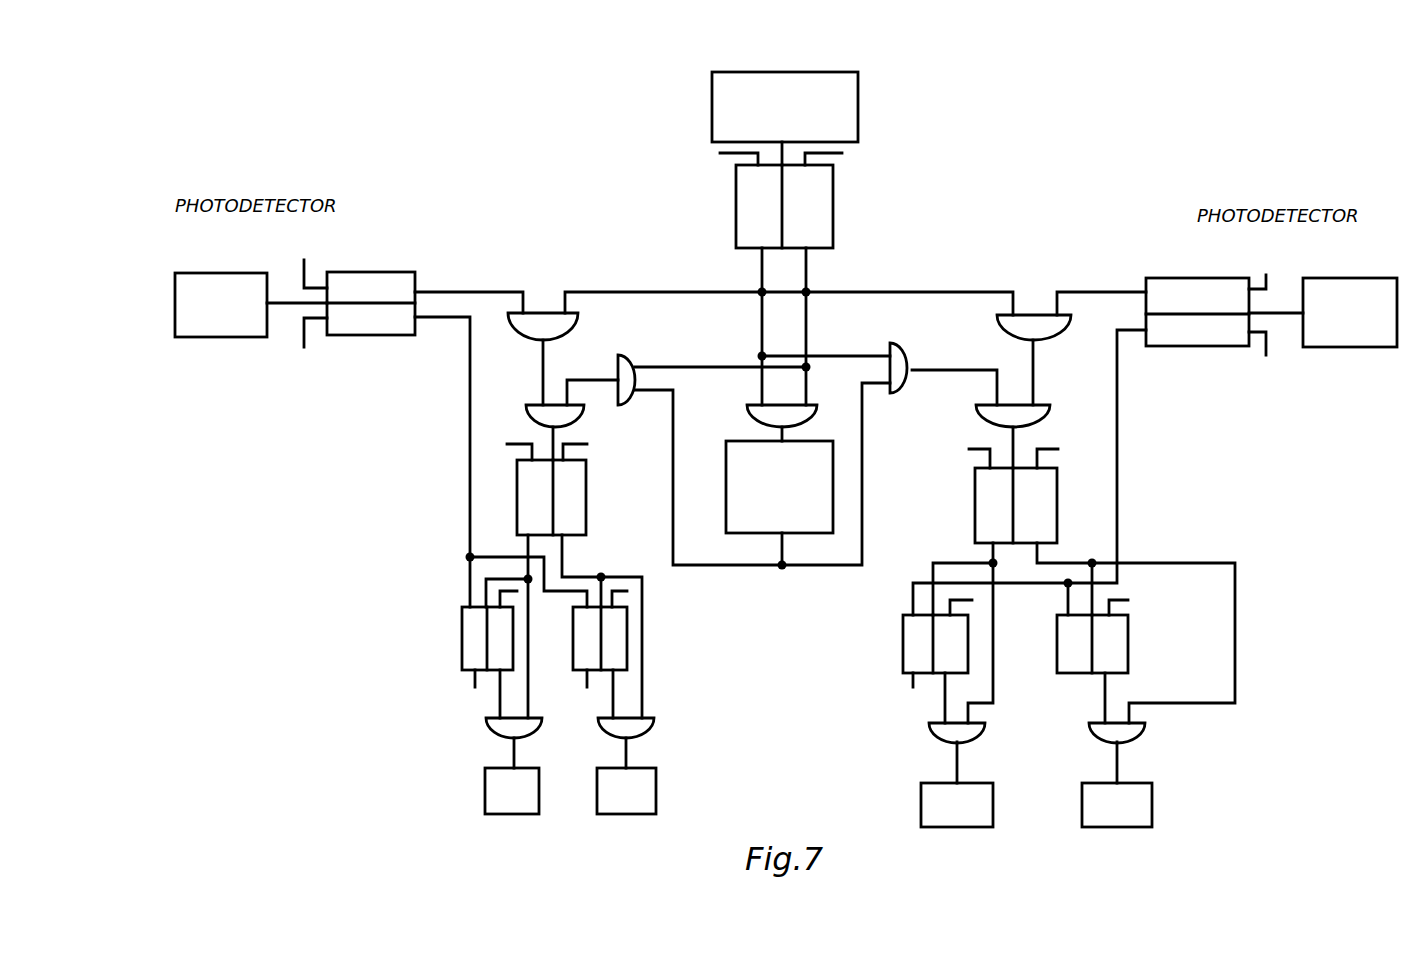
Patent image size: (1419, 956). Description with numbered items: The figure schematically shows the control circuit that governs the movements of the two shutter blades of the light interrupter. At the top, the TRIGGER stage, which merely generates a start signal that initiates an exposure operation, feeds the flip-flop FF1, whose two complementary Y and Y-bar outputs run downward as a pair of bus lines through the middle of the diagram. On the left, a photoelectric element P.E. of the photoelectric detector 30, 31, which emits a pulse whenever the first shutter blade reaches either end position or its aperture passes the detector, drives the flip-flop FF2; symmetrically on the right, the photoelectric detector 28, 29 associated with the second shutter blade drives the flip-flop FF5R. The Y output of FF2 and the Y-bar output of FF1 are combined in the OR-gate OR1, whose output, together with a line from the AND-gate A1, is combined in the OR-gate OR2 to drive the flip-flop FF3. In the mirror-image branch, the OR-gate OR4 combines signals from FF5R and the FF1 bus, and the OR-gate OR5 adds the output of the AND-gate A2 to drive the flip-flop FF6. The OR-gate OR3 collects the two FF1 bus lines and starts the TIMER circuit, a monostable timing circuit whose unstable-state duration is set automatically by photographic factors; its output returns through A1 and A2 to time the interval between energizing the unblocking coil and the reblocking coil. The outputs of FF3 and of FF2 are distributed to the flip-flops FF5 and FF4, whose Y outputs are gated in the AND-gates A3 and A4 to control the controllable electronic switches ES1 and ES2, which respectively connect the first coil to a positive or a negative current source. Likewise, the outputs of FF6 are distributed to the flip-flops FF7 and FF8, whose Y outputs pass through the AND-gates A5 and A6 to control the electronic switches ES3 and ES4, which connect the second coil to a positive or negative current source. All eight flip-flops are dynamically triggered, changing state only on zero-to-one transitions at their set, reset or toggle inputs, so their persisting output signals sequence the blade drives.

The photoelectric detector 30 is at (219, 283).
The photoelectric detector 31 is at (207, 273).
The photoelectric detector 28 is at (1347, 291).
The photoelectric detector 29 is at (1362, 278).
The flip-flop FF1 is at (833, 215).
The flip-flop FF2 is at (380, 272).
The flip-flop FF3 is at (586, 500).
The flip-flop FF4 is at (628, 652).
The flip-flop FF5 is at (461, 636).
The flip-flop FF5R is at (1180, 278).
The flip-flop FF6 is at (975, 508).
The flip-flop FF7 is at (903, 642).
The flip-flop FF8 is at (1128, 655).
The OR-gate OR1 is at (517, 338).
The OR-gate OR2 is at (537, 425).
The OR-gate OR3 is at (746, 416).
The OR-gate OR4 is at (1050, 337).
The OR-gate OR5 is at (1050, 421).
The AND-gate A1 is at (624, 355).
The AND-gate A2 is at (917, 347).
The AND-gate A3 is at (497, 735).
The AND-gate A4 is at (650, 734).
The AND-gate A5 is at (930, 735).
The AND-gate A6 is at (1143, 738).
The controllable electronic switch ES1 is at (512, 791).
The controllable electronic switch ES2 is at (626, 791).
The controllable electronic switch ES3 is at (957, 805).
The controllable electronic switch ES4 is at (1117, 805).
The TRIGGER stage TRIGGER is at (785, 107).
The TIMER CIRCUIT TIMER is at (779, 487).